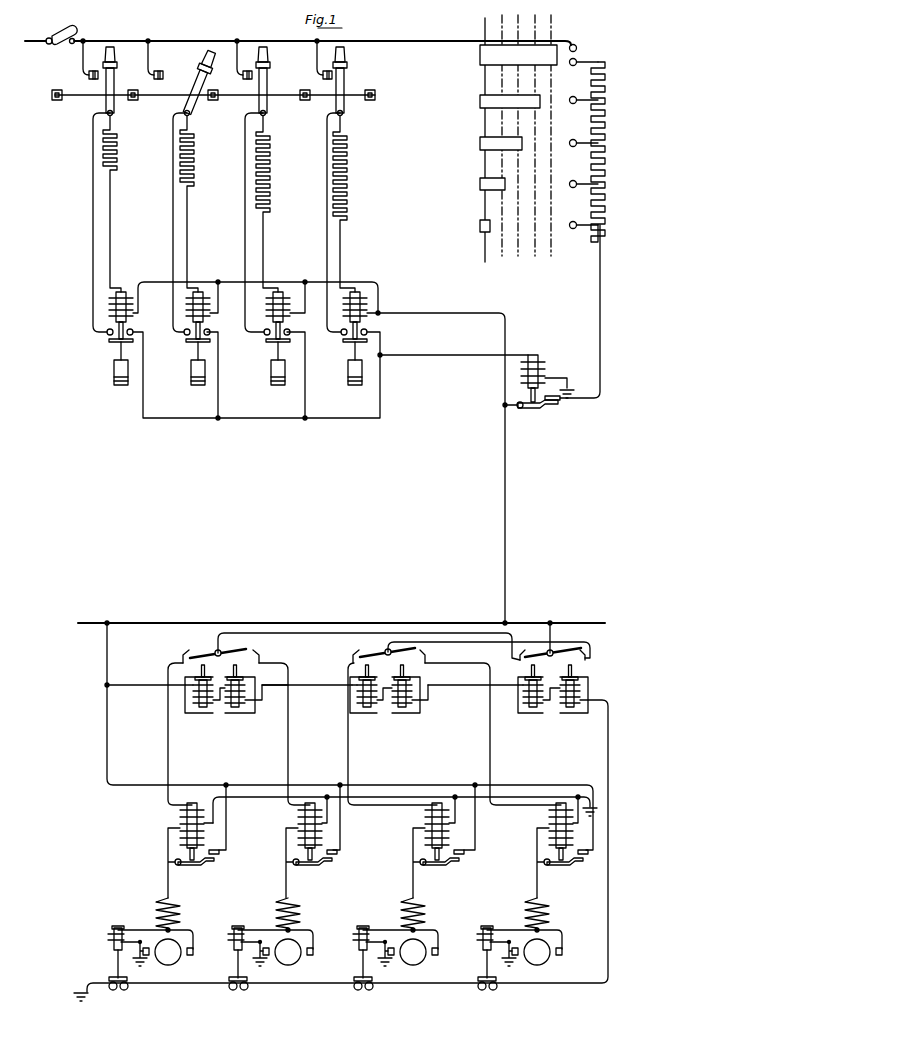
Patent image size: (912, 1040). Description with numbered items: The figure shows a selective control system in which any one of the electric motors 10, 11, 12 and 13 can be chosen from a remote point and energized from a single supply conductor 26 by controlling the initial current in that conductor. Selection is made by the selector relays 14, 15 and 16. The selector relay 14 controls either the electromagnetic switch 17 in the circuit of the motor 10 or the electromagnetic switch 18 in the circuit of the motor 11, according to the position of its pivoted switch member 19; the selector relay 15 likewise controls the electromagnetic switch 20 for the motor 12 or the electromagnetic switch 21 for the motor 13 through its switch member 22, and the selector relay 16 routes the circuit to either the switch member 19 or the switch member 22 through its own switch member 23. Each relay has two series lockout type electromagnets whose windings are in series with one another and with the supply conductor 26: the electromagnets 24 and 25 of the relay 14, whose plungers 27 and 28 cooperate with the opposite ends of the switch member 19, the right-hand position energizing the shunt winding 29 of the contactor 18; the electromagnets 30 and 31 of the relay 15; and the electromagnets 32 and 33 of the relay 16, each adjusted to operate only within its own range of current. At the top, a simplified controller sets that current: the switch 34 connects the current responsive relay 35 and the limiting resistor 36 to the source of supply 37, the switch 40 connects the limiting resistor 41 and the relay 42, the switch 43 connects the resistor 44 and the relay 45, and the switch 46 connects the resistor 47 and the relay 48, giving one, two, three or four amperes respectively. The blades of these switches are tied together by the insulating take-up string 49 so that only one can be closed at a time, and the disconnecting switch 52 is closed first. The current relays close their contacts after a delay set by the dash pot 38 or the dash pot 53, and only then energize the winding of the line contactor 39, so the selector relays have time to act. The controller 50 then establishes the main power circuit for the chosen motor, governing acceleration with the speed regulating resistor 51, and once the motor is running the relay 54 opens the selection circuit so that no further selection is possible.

The electric motor 10 is at (172, 960).
The electric motor 11 is at (292, 960).
The electric motor 12 is at (417, 960).
The electric motor 13 is at (541, 960).
The selector relay 14 is at (225, 734).
The selector relay 15 is at (454, 734).
The selector relay 16 is at (352, 828).
The electromagnetic switch 17 is at (193, 850).
The electromagnetic switch 18 is at (311, 850).
The switch member 19 is at (208, 651).
The electromagnetic switch 20 is at (438, 850).
The electromagnetic switch 21 is at (562, 850).
The switch member 22 is at (372, 654).
The switch member 23 is at (530, 661).
The series lockout type electromagnet 24 is at (185, 700).
The series lockout type electromagnet 25 is at (255, 706).
The supply conductor 26 is at (127, 622).
The plunger 27 is at (200, 712).
The plunger 28 is at (240, 712).
The shunt winding 29 is at (297, 814).
The series lockout type electromagnet 30 is at (365, 712).
The series lockout type electromagnet 31 is at (408, 712).
The series lockout type electromagnet 32 is at (518, 693).
The series lockout type electromagnet 33 is at (590, 688).
The switch 34 is at (343, 58).
The current responsive relay 35 is at (347, 341).
The limiting resistor 36 is at (349, 188).
The source of supply 37 is at (385, 44).
The dash pot 38 is at (348, 380).
The line contactor 39 is at (533, 412).
The switch 40 is at (266, 55).
The limiting resistor 41 is at (272, 167).
The current responsive relay 42 is at (270, 344).
The switch 43 is at (172, 56).
The resistor 44 is at (196, 165).
The relay 45 is at (190, 344).
The switch 46 is at (113, 55).
The resistor 47 is at (118, 153).
The relay 48 is at (107, 341).
The insulating take-up string 49 is at (75, 101).
The controller 50 is at (503, 138).
The speed regulating resistor 51 is at (608, 138).
The disconnecting switch 52 is at (62, 30).
The dash pot 53 is at (190, 375).
The relay 54 is at (362, 926).